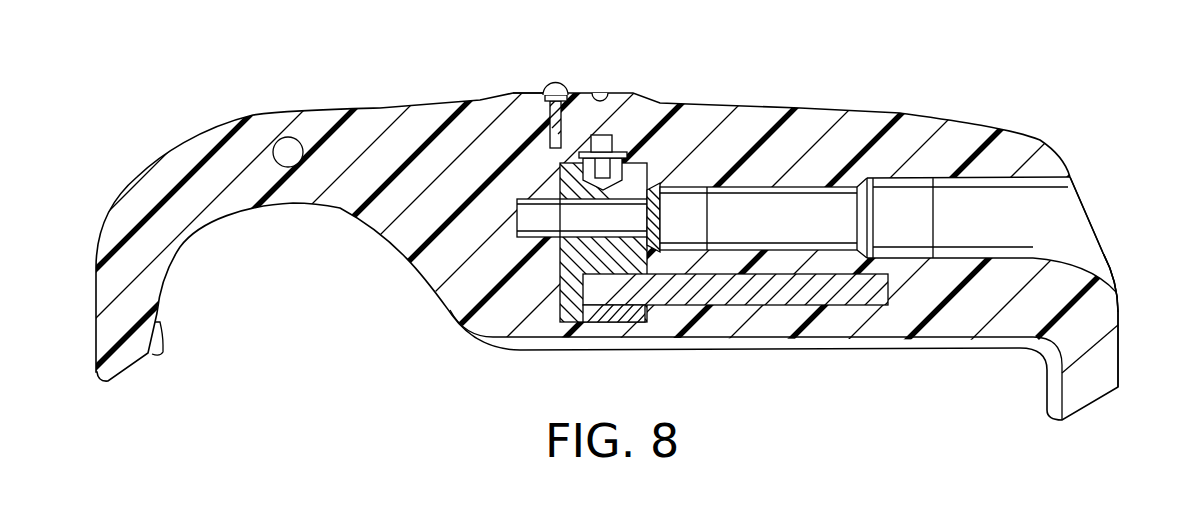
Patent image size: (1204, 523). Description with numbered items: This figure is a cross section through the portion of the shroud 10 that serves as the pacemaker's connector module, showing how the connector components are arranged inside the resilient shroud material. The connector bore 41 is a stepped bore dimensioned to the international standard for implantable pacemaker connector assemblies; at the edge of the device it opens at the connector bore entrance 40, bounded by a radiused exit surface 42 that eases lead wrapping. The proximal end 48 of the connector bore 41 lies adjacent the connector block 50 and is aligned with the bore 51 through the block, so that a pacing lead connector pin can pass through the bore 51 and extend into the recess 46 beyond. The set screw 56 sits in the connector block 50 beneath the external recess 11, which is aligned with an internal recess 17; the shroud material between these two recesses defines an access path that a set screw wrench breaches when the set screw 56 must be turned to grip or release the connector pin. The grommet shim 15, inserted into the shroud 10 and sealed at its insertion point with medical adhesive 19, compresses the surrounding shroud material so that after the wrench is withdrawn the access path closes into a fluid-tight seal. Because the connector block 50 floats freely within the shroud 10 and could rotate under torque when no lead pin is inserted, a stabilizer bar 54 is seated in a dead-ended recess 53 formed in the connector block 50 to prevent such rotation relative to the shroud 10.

The shroud 10 is at (878, 108).
The recess 11 is at (600, 92).
The grommet shim 15 is at (538, 94).
The internal recess 17 is at (606, 140).
The medical adhesive 19 is at (553, 87).
The connector bore entrance 40 is at (1104, 214).
The connector bore 41 is at (1012, 250).
The radiused exit surface 42 is at (1100, 283).
The recess 46 is at (530, 213).
The proximal end 48 is at (652, 210).
The connector block 50 is at (553, 320).
The bore 51 is at (590, 233).
The dead-ended recess 53 is at (610, 310).
The stabilizer bar 54 is at (772, 288).
The set screw 56 is at (647, 175).